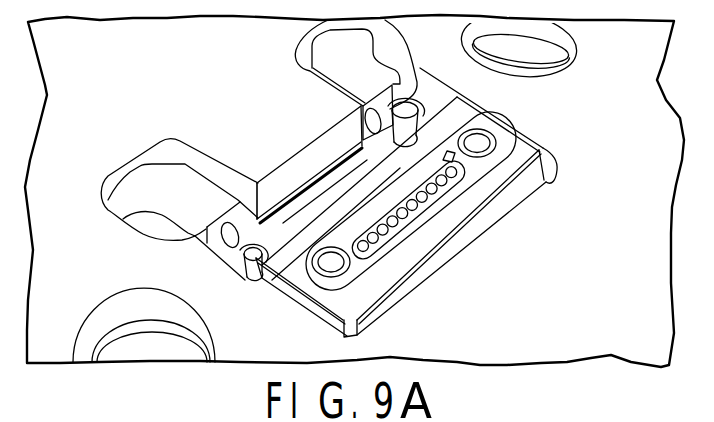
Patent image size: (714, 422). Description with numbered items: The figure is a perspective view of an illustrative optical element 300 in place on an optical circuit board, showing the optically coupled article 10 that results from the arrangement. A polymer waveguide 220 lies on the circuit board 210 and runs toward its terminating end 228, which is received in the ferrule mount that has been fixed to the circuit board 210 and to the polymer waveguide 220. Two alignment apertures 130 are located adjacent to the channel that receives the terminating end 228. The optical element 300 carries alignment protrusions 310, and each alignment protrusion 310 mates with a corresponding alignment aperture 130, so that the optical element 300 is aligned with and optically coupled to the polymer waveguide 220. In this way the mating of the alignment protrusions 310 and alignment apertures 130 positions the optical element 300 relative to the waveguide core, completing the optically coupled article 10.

The optically coupled article 10 is at (519, 421).
The alignment aperture 130 is at (381, 121).
The circuit board 210 is at (237, 98).
The polymer waveguide 220 is at (294, 184).
The terminating end 228 is at (338, 134).
The optical element 300 is at (446, 239).
The alignment protrusion 310 is at (420, 128).